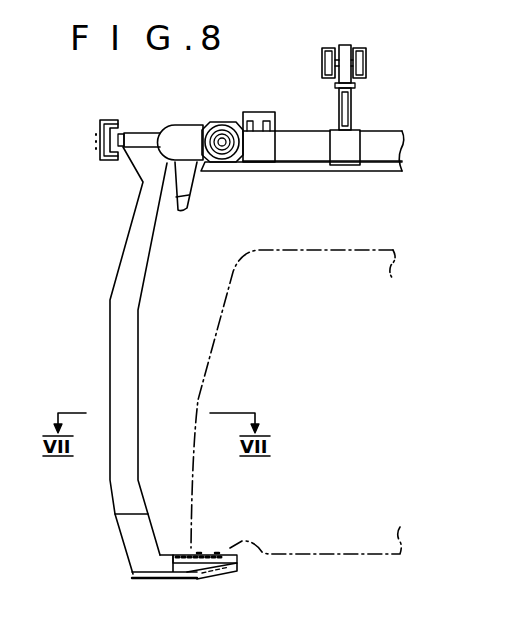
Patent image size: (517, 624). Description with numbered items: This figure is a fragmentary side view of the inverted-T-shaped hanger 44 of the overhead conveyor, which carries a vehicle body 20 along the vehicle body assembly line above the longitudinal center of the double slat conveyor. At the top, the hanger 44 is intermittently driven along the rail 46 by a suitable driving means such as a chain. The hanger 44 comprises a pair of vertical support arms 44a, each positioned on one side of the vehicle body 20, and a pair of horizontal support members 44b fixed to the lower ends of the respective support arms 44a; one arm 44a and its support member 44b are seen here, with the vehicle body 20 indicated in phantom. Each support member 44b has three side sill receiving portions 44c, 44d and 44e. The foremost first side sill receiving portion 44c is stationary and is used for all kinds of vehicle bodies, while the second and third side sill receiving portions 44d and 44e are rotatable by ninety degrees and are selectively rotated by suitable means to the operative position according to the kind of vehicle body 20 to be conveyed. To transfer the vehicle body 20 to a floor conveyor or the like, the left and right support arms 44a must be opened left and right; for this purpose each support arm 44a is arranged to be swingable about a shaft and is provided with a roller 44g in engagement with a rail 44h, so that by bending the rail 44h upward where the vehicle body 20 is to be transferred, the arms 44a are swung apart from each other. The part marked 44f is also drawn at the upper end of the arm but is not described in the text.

The vehicle body 20 is at (226, 297).
The inverted-T-shaped hanger 44 is at (403, 119).
The vertical support arm 44a is at (117, 278).
The horizontal support member 44b is at (165, 553).
The first side sill receiving portion 44c is at (217, 552).
The second side sill receiving portion 44d is at (237, 560).
The third side sill receiving portion 44e is at (198, 552).
The knob 44f is at (220, 124).
The roller 44g is at (124, 133).
The rail 44h is at (109, 119).
The rail 46 is at (367, 62).